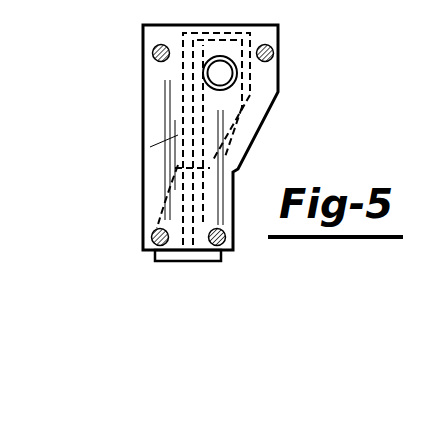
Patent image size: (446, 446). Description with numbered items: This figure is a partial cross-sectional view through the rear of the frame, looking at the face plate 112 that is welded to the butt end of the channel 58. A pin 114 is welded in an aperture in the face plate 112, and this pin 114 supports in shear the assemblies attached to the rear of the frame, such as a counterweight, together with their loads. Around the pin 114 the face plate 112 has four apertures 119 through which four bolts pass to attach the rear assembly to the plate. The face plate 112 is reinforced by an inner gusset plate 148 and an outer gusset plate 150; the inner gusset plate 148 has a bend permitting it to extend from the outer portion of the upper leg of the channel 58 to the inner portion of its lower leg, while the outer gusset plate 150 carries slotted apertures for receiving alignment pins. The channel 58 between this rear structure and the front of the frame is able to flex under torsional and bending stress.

The face plate 112 is at (151, 109).
The pin 114 is at (228, 80).
The mounting holes 119 is at (164, 46).
The inner gusset plate 148 is at (258, 131).
The outer gusset plate 150 is at (150, 149).
The channel 58 is at (248, 150).